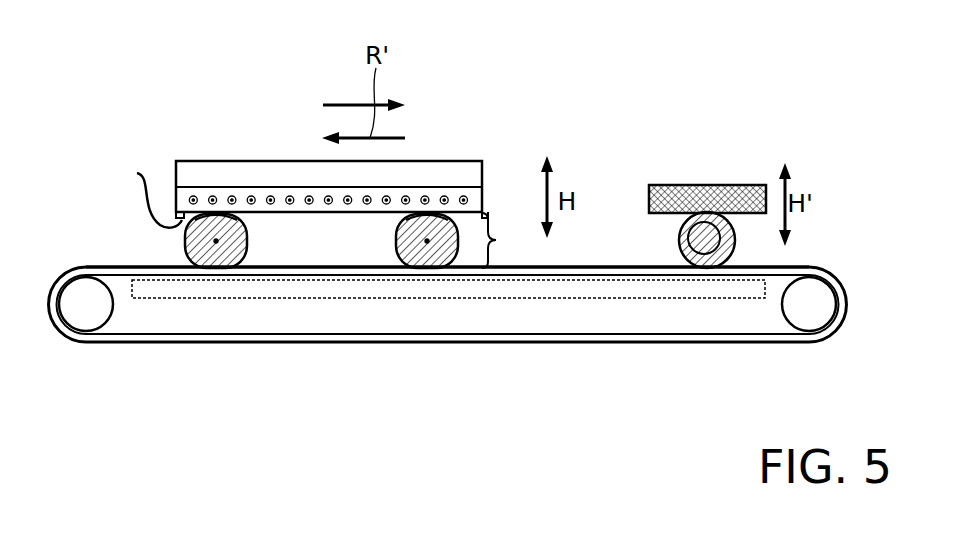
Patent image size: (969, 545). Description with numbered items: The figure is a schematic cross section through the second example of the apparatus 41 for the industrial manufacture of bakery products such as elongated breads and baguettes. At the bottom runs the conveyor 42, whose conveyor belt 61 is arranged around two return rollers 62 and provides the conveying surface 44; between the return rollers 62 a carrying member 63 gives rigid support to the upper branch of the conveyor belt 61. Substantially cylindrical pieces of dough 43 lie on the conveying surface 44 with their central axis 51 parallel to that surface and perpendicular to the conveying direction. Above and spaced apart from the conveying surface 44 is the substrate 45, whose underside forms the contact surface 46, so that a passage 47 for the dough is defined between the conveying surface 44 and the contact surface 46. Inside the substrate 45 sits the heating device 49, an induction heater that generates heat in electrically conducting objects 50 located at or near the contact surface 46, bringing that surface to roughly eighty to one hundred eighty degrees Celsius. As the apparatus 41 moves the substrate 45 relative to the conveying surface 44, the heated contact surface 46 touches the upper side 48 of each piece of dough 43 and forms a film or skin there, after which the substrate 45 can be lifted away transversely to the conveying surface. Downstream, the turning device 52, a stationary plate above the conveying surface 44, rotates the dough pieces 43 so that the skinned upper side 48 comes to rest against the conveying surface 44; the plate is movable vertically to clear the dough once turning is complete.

The apparatus 41 is at (104, 92).
The conveyor 42 is at (643, 352).
The piece of dough 43 is at (248, 240).
The conveying surface 44 is at (800, 266).
The substrate 45 is at (460, 186).
The contact surface 46 is at (142, 192).
The passage 47 is at (509, 240).
The upper side 48 is at (214, 214).
The heating device 49 is at (236, 172).
The electrically conducting objects 50 is at (253, 196).
The central axis 51 is at (222, 243).
The turning device 52 is at (713, 185).
The conveyor belt 61 is at (167, 272).
The return rollers 62 is at (90, 312).
The carrying member 63 is at (225, 290).